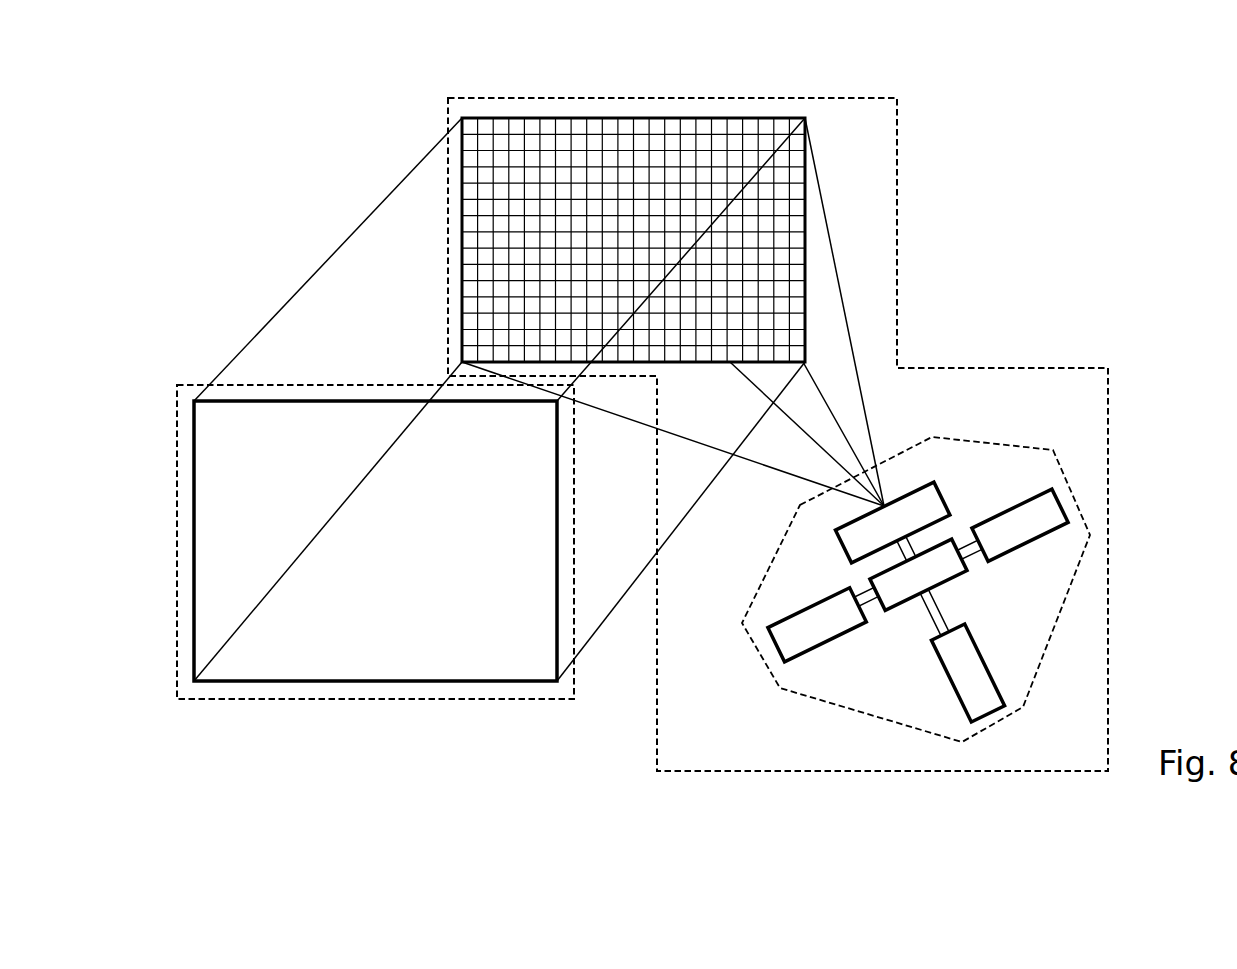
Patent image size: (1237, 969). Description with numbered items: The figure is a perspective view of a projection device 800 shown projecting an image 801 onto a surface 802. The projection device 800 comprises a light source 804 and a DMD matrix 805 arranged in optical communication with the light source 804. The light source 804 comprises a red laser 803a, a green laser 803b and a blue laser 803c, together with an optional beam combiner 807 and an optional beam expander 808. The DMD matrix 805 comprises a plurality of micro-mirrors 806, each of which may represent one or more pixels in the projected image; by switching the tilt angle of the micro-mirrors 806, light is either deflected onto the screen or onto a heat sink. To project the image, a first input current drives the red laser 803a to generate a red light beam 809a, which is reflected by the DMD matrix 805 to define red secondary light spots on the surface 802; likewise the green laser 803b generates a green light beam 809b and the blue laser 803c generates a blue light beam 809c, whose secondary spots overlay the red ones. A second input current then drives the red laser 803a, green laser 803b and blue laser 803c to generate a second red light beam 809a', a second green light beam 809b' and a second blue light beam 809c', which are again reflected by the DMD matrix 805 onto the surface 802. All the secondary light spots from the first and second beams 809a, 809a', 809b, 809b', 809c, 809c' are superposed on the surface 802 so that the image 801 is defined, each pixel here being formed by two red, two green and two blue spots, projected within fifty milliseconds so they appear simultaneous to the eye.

The projection device 800 is at (897, 320).
The image 801 is at (322, 682).
The surface 802 is at (467, 700).
The red laser 803a is at (775, 643).
The green laser 803b is at (988, 717).
The blue laser 803c is at (1063, 509).
The light source 804 is at (1050, 643).
The DMD matrix 805 is at (468, 206).
The micro-mirrors 806 is at (640, 125).
The beam combiner 807 is at (953, 528).
The beam expander 808 is at (943, 497).
The red light beam 809a is at (824, 566).
The second red light beam 809a' is at (824, 580).
The green light beam 809b is at (902, 647).
The second green light beam 809b' is at (902, 647).
The blue light beam 809c is at (1002, 589).
The second blue light beam 809c' is at (1002, 589).